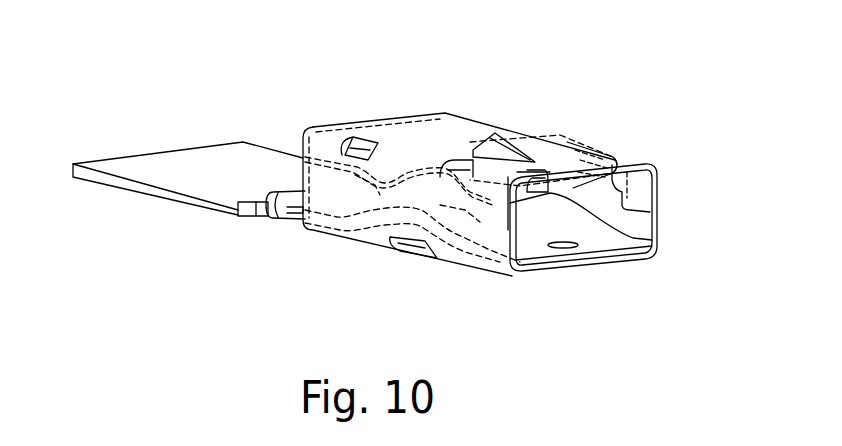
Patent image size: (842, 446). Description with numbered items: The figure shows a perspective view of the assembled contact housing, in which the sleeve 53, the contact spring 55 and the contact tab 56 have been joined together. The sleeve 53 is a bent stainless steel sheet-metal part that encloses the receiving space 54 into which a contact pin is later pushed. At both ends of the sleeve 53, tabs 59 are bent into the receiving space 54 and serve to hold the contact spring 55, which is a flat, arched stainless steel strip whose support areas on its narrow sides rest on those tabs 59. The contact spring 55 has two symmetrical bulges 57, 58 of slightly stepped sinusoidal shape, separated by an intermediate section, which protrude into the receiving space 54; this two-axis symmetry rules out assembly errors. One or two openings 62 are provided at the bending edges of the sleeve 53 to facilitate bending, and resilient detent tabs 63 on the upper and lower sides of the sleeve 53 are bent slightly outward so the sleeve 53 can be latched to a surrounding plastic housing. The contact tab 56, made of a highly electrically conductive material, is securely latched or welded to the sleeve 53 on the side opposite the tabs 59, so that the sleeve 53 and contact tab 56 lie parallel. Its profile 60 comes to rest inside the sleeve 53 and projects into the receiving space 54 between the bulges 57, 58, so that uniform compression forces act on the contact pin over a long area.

The sleeve 53 is at (623, 152).
The receiving space 54 is at (625, 227).
The contact spring 55 is at (423, 154).
The contact tab 56 is at (174, 150).
The bulge 57 is at (367, 183).
The bulge 58 is at (463, 215).
The tab 59 is at (582, 185).
The profile 60 is at (415, 214).
The opening 62 is at (363, 137).
The detent tab 63 is at (527, 133).